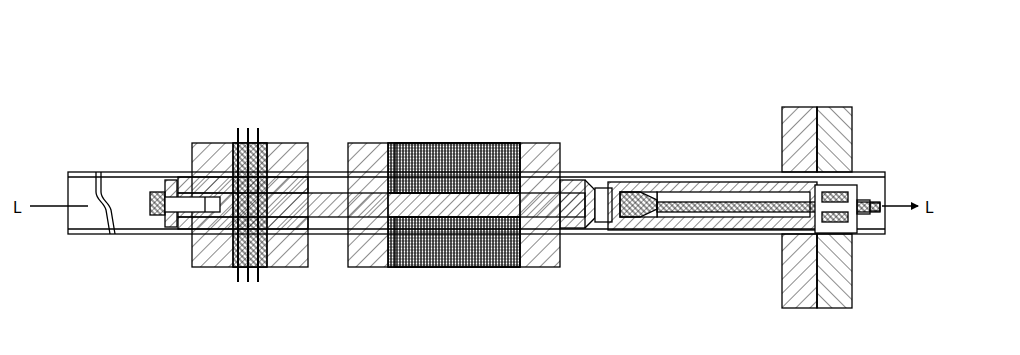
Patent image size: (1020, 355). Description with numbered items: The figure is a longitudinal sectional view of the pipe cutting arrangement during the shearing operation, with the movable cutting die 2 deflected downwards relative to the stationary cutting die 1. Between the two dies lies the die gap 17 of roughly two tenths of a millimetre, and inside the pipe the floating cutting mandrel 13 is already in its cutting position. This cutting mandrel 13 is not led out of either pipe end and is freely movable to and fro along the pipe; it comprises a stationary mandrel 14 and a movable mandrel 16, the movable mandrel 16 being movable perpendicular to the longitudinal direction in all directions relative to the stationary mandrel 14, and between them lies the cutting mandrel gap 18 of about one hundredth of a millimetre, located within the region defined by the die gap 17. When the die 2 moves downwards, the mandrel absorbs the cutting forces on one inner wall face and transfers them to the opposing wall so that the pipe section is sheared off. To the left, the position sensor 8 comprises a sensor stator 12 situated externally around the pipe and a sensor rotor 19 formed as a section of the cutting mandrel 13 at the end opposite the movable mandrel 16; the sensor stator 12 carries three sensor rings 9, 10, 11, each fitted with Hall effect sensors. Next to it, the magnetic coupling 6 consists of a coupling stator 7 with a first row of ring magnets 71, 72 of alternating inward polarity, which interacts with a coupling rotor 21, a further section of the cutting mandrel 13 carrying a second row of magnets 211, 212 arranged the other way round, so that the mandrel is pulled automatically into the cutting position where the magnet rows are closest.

The stationary cutting die 1 is at (795, 120).
The movable cutting die 2 is at (837, 120).
The die gap 17 is at (819, 103).
The sensor stator 12 is at (205, 150).
The position sensor 8 is at (249, 157).
The first sensor ring 9 is at (237, 124).
The second sensor ring 10 is at (249, 124).
The third sensor ring 11 is at (261, 124).
The coupling stator 7 is at (535, 153).
The ring magnet 71 is at (393, 148).
The ring magnet 72 is at (407, 148).
The magnet 211 is at (393, 190).
The magnet 212 is at (407, 188).
The magnetic coupling 6 is at (448, 109).
The coupling rotor 21 is at (453, 188).
The sensor rotor 19 is at (233, 225).
The floating cutting mandrel 13 is at (573, 197).
The stationary mandrel 14 is at (732, 187).
The movable mandrel 16 is at (837, 187).
The cutting mandrel gap 18 is at (209, 347).